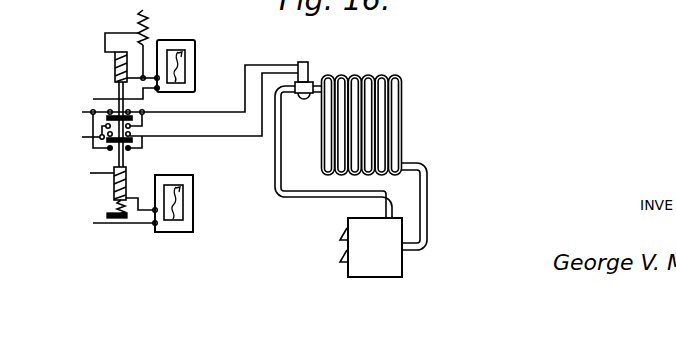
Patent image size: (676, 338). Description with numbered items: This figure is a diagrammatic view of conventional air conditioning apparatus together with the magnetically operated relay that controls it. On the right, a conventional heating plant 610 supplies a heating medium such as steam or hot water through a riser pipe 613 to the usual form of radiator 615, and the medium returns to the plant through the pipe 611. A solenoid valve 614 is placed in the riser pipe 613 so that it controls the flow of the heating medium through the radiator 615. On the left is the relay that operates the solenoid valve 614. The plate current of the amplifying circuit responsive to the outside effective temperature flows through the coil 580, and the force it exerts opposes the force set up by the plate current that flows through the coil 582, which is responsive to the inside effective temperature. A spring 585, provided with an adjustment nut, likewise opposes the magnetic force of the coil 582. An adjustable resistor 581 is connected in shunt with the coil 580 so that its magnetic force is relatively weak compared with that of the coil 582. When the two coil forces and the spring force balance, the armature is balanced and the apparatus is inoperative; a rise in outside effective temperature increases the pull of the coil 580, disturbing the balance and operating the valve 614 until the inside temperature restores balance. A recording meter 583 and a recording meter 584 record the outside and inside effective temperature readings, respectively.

The coil 580 is at (117, 78).
The adjustable resistor 581 is at (148, 35).
The coil 582 is at (147, 175).
The recording meter 583 is at (186, 40).
The recording meter 584 is at (180, 175).
The spring 585 is at (117, 206).
The heating plant 610 is at (371, 247).
The return pipe 611 is at (427, 187).
The riser pipe 613 is at (308, 196).
The solenoid valve 614 is at (307, 62).
The radiator 615 is at (401, 98).